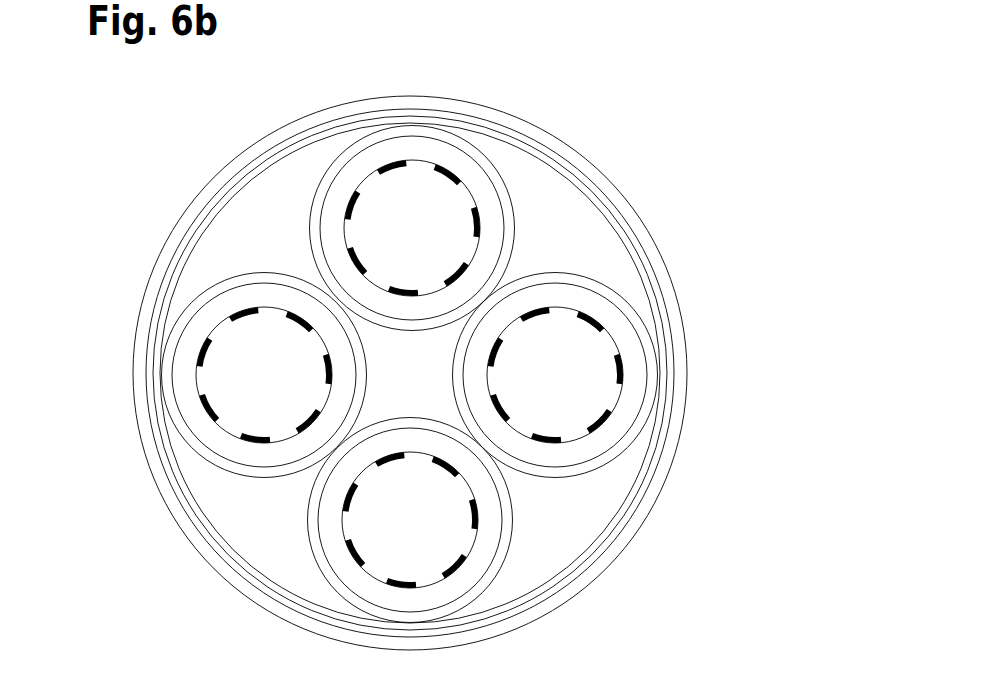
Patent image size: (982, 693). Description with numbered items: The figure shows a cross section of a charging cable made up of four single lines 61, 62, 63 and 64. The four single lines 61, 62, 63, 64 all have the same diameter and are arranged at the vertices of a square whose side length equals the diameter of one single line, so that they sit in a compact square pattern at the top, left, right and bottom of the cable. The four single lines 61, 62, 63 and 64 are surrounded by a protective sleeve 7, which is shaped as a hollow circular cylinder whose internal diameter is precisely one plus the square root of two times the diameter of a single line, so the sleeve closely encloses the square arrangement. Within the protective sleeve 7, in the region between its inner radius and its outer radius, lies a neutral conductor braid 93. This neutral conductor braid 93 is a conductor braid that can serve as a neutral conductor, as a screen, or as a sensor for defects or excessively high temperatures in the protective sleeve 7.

The protective sleeve 7 is at (660, 327).
The neutral conductor braid 93 is at (680, 392).
The single line 61 is at (222, 347).
The single line 62 is at (575, 342).
The single line 63 is at (427, 198).
The single line 64 is at (452, 521).